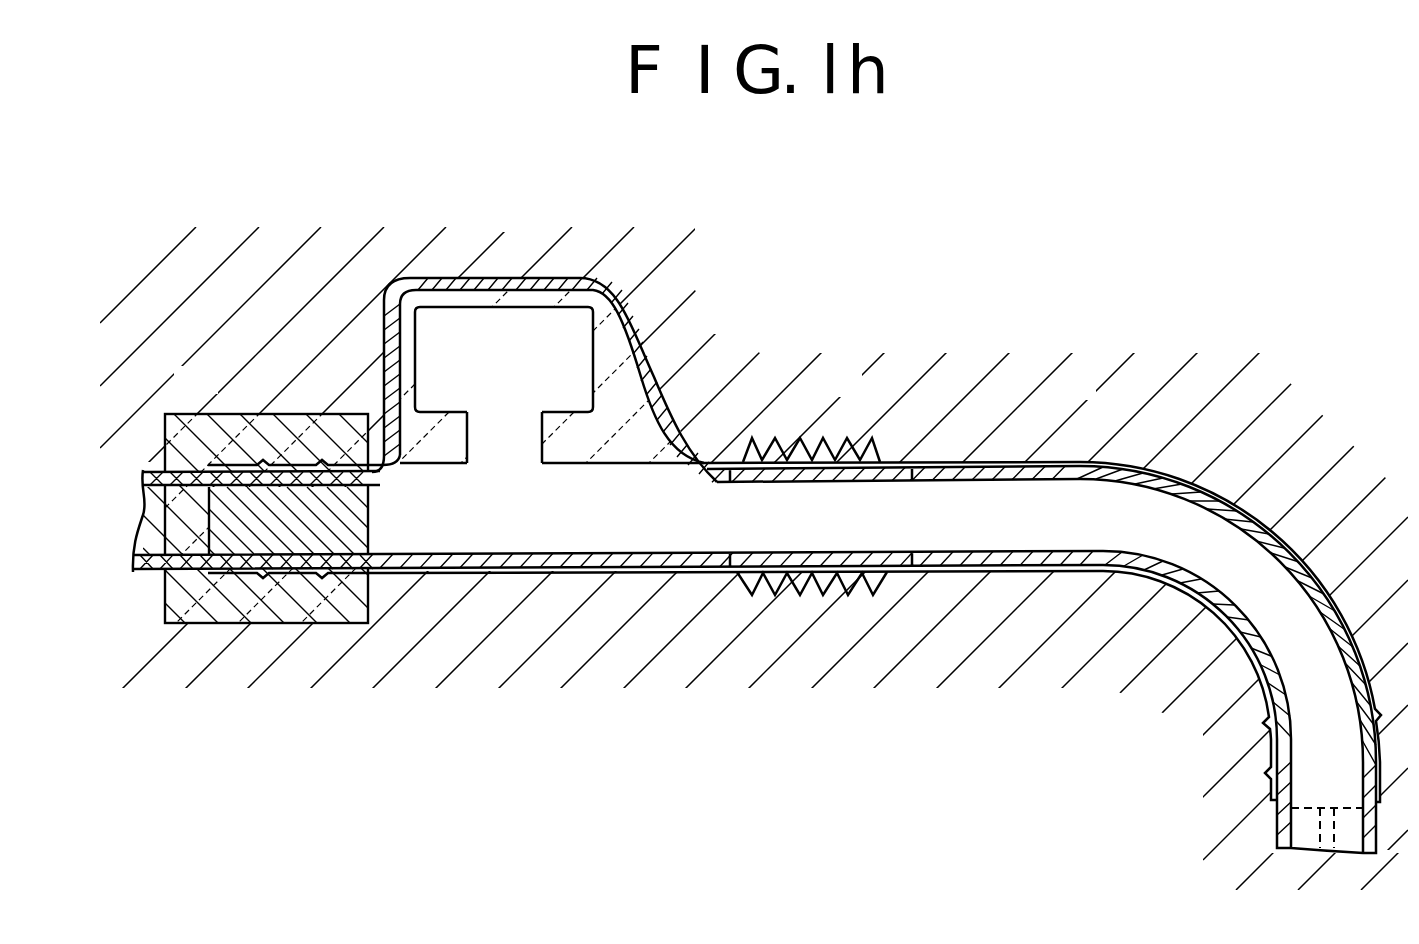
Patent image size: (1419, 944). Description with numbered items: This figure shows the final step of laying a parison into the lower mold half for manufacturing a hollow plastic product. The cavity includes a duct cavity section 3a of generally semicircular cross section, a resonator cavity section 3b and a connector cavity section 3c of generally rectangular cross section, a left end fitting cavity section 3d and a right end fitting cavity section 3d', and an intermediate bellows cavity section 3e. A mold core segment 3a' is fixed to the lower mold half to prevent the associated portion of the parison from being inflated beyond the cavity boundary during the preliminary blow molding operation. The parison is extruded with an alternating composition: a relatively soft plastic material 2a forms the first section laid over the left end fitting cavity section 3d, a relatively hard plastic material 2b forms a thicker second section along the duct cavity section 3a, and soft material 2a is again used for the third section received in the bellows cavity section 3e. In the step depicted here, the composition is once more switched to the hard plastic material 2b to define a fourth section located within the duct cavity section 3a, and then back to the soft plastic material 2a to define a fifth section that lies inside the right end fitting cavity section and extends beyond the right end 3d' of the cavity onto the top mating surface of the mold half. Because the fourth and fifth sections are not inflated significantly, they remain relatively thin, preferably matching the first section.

The relatively soft plastic material 2a is at (248, 565).
The relatively hard plastic material 2b is at (644, 363).
The duct cavity section 3a is at (546, 558).
The mold core segment 3a' is at (348, 558).
The resonator cavity section 3b is at (498, 320).
The connector cavity section 3c is at (528, 440).
The left end fitting cavity section 3d is at (289, 471).
The right end fitting cavity section 3d' is at (1239, 822).
The intermediate bellows cavity section 3e is at (823, 450).